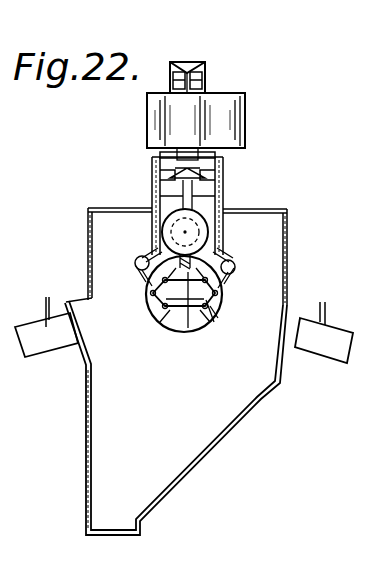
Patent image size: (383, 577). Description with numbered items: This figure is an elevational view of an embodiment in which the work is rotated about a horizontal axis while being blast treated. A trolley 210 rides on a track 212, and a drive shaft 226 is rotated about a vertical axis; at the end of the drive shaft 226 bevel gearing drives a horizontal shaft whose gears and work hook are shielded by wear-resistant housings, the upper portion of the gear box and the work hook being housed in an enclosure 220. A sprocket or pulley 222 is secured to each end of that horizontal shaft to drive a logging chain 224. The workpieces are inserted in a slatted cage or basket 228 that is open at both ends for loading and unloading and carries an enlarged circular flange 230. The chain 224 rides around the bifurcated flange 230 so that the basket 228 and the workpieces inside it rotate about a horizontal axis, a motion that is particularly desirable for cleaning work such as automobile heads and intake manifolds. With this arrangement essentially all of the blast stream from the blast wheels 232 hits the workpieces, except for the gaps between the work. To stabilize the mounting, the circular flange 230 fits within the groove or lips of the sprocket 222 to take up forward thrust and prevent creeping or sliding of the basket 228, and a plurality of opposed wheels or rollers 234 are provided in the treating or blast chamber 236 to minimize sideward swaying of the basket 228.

The trolley 210 is at (233, 128).
The track 212 is at (190, 62).
The enclosure 220 is at (222, 204).
The sprocket or pulley 222 is at (163, 232).
The logging chain 224 is at (212, 240).
The drive shaft 226 is at (189, 318).
The slatted cage or basket 228 is at (207, 320).
The circular flange 230 is at (167, 318).
The blast wheel 232 is at (43, 345).
The opposed wheels or rollers 234 is at (138, 270).
The treating or blast chamber 236 is at (183, 410).